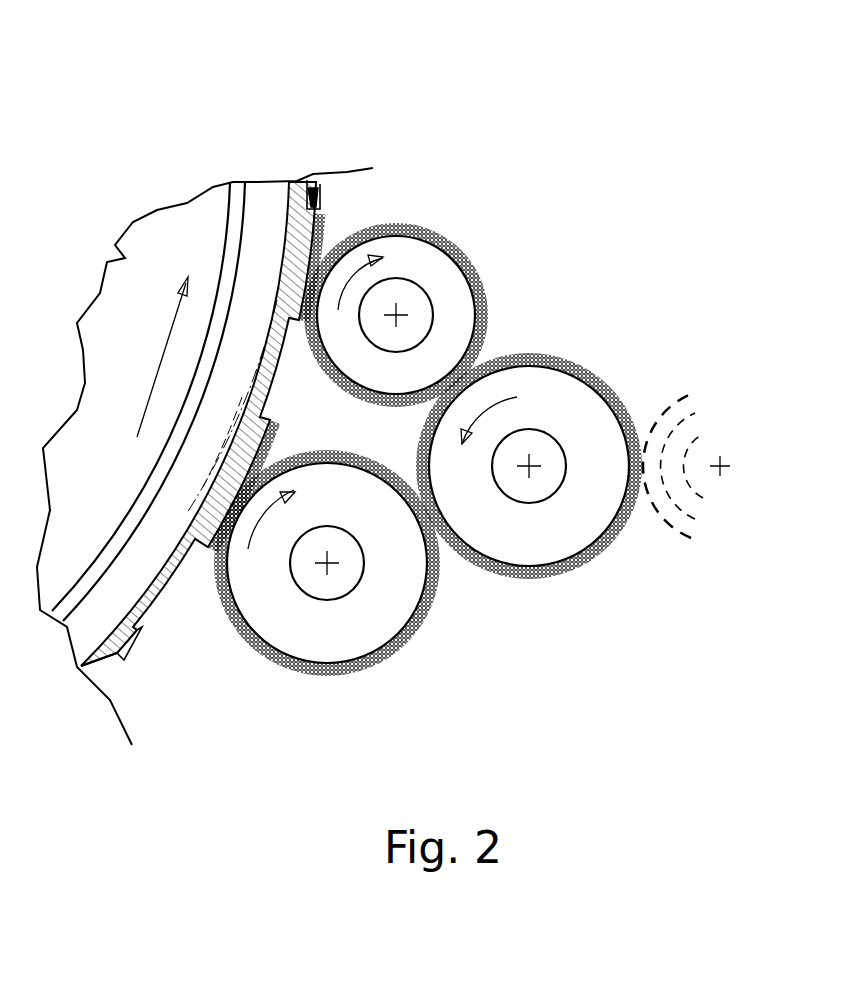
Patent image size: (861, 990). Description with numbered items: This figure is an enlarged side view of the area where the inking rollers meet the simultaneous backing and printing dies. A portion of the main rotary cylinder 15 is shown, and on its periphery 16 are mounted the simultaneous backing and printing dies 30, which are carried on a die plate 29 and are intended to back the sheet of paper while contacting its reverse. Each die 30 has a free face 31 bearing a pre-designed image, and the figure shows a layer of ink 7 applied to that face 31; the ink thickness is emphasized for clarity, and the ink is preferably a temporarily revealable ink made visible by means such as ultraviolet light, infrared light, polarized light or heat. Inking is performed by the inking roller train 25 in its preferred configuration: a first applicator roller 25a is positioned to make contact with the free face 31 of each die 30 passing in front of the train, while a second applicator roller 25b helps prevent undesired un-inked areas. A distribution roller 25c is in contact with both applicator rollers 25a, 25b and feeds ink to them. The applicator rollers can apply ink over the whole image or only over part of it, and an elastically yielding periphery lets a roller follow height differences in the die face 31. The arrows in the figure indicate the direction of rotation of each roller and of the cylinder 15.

The ink 7 is at (322, 220).
The main rotary cylinder 15 is at (118, 488).
The periphery 16 is at (290, 185).
The inking roller train 25 is at (476, 453).
The first applicator roller 25a is at (430, 270).
The second applicator roller 25b is at (372, 632).
The distribution roller 25c is at (572, 532).
The die plate 29 is at (268, 313).
The simultaneous backing and printing die 30 is at (315, 187).
The free face 31 is at (317, 197).